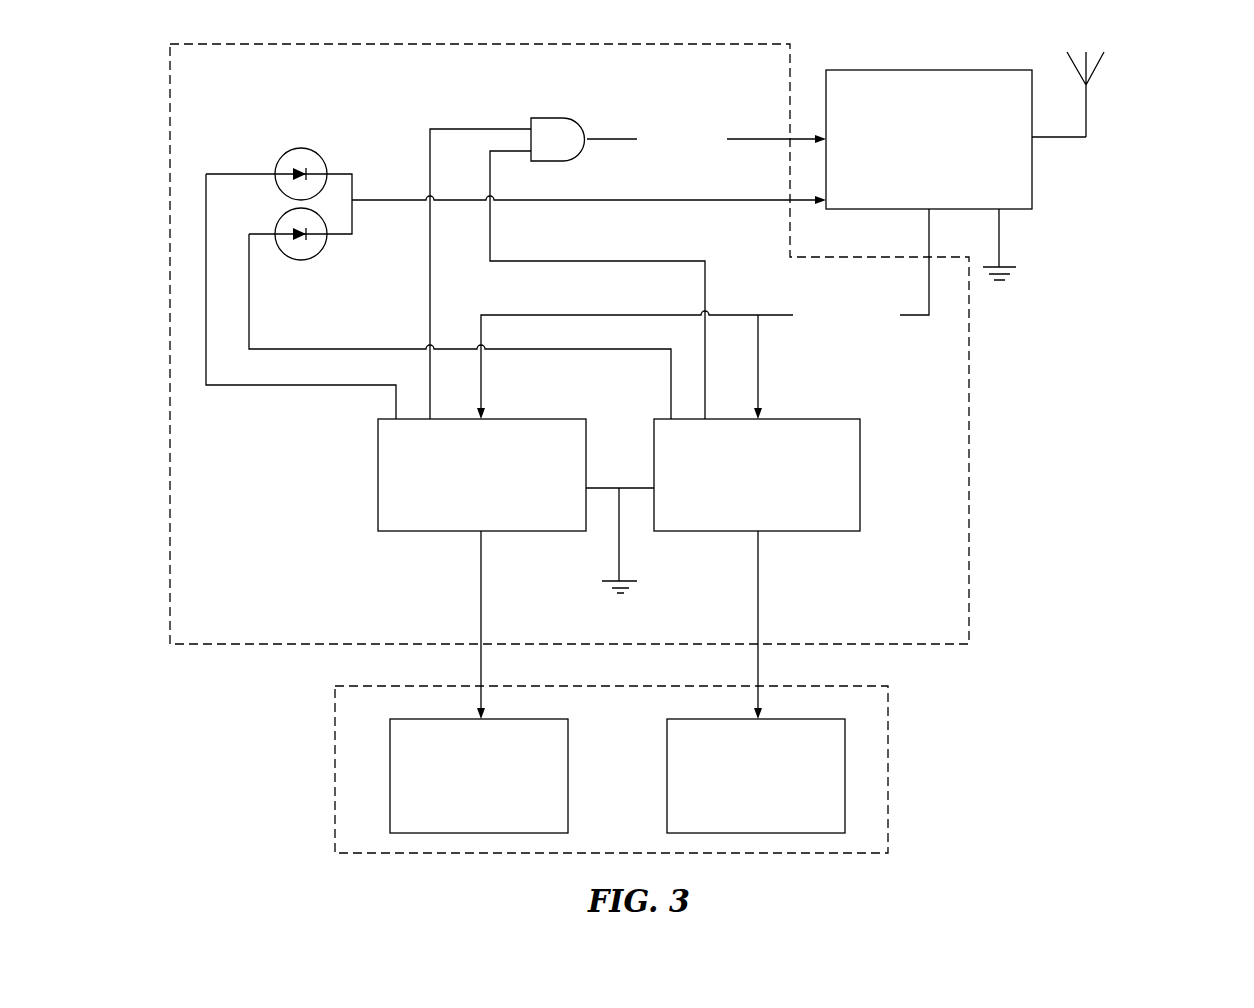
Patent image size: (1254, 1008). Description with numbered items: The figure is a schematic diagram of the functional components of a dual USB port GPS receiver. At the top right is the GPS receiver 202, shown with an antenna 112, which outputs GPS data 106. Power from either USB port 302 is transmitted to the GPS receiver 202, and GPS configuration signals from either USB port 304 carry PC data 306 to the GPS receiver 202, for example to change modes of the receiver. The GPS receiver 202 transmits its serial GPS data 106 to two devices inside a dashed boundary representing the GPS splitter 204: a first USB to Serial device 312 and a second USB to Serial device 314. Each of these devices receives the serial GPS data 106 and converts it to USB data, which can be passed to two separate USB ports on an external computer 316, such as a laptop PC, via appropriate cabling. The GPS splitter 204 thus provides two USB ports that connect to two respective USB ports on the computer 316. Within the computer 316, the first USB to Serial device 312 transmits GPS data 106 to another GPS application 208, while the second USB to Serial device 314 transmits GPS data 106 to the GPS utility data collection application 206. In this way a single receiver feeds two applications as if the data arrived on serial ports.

The GPS data 106 is at (845, 268).
The antenna 112 is at (1086, 74).
The GPS receiver 202 is at (929, 166).
The GPS splitter 204 is at (985, 513).
The GPS utility data collection application 206 is at (756, 767).
The other GPS application 208 is at (479, 767).
The power from either USB port 302 is at (516, 248).
The GPS configuration signals from either USB port 304 is at (567, 234).
The PC data 306 is at (706, 149).
The USB to Serial device 1 312 is at (482, 559).
The USB to Serial device 2 314 is at (723, 559).
The computer 316 is at (323, 778).